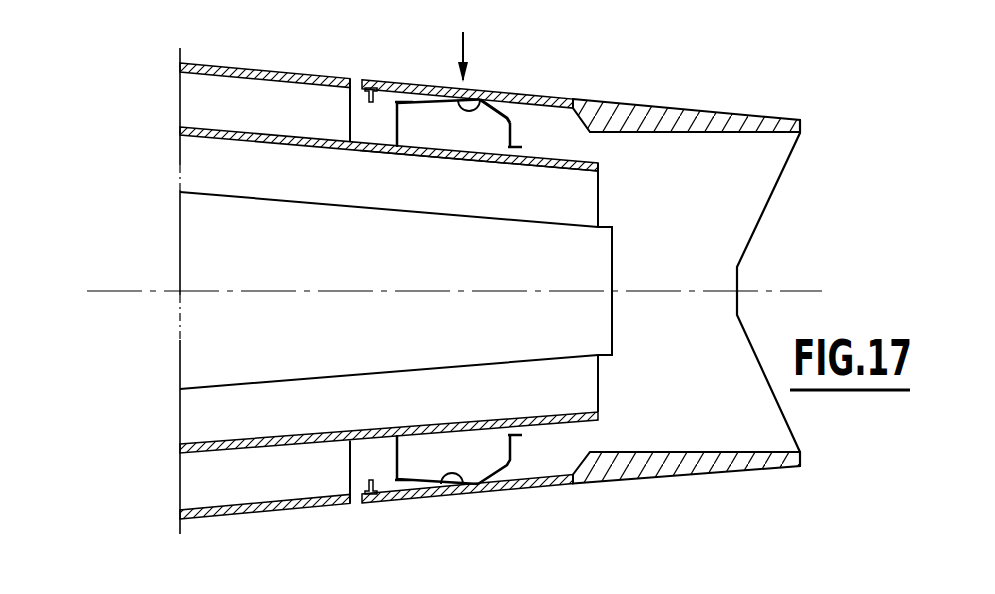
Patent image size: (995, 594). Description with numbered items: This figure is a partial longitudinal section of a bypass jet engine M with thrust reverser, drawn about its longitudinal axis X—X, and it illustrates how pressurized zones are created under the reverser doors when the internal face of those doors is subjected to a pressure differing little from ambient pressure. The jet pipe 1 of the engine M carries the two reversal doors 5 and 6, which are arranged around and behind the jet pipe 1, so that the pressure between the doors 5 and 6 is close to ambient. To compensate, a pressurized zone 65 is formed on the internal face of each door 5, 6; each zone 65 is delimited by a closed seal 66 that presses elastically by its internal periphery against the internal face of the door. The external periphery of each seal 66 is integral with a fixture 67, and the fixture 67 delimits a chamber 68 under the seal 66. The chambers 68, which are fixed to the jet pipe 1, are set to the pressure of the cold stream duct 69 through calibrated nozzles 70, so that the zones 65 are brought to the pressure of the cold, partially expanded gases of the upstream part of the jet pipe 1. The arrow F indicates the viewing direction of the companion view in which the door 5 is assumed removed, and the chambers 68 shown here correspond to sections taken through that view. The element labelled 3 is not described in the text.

The jet pipe 1 is at (225, 511).
The outer sleeve upper half 3 is at (198, 67).
The reversal door 5 is at (673, 177).
The reversal door 6 is at (630, 422).
The pressurized zone 65 is at (480, 98).
The closed seal 66 is at (423, 87).
The fixture 67 is at (520, 127).
The chamber 68 is at (488, 133).
The cold stream duct 69 is at (202, 160).
The calibrated nozzle 70 is at (460, 158).
The jet engine M is at (203, 245).
The arrow F is at (469, 52).
The longitudinal axis X is at (454, 275).